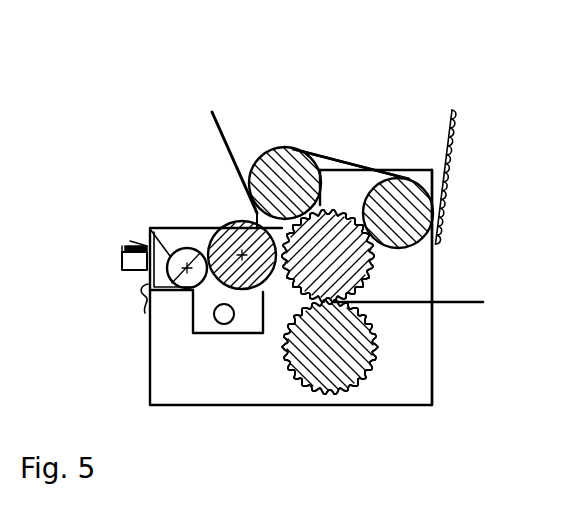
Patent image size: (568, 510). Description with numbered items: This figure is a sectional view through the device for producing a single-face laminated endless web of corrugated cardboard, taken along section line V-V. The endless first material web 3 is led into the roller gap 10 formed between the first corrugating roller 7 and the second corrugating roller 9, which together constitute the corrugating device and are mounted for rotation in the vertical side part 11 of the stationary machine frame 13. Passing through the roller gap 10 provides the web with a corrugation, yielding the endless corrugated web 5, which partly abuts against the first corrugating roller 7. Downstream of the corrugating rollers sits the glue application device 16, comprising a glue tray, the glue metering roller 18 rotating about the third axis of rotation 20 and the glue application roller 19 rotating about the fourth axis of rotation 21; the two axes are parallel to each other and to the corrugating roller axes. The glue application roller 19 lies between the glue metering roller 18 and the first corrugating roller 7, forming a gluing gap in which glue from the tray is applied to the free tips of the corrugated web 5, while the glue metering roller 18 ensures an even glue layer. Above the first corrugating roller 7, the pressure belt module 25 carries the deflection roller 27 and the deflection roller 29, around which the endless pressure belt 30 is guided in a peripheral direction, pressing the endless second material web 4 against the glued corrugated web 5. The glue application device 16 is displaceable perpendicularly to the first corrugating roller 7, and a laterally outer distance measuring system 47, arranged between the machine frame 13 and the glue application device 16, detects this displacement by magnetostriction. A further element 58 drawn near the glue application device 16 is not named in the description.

The endless first material web 3 is at (462, 302).
The endless second material web 4 is at (215, 129).
The endless corrugated web 5 is at (452, 145).
The first corrugating roller 7 is at (341, 209).
The second corrugating roller 9 is at (378, 346).
The roller gap 10 is at (333, 302).
The side part 11 is at (434, 262).
The stationary machine frame 13 is at (434, 383).
The glue application device 16 is at (168, 229).
The glue metering roller 18 is at (131, 242).
The glue application roller 19 is at (225, 226).
The third axis of rotation 20 is at (168, 282).
The fourth axis of rotation 21 is at (210, 290).
The pressure belt module 25 is at (298, 148).
The deflection roller 27 is at (274, 150).
The deflection roller 29 is at (417, 185).
The endless pressure belt 30 is at (330, 159).
The distance measuring system 47 is at (122, 247).
The spring wire 58 is at (141, 299).